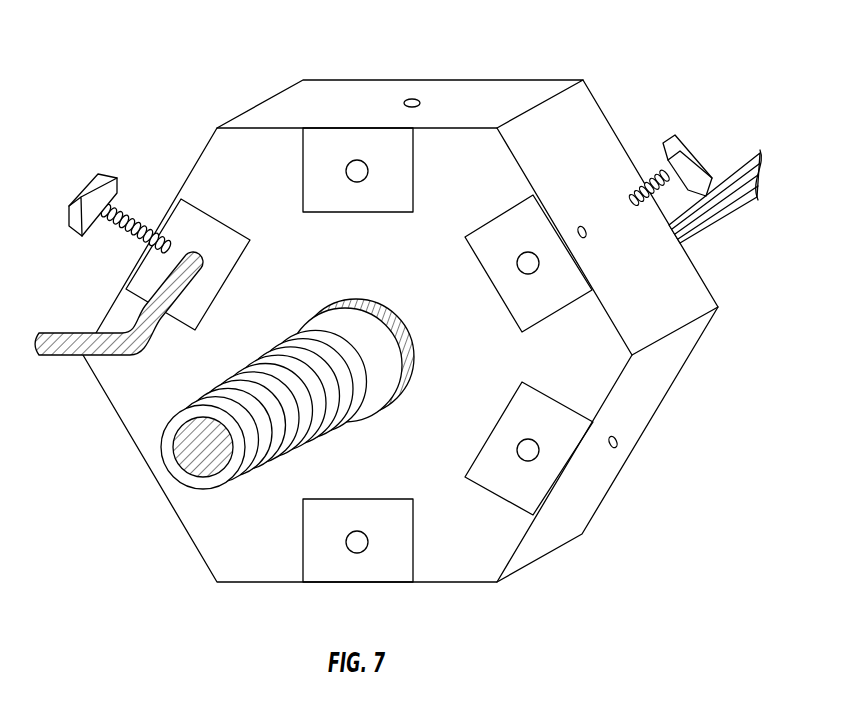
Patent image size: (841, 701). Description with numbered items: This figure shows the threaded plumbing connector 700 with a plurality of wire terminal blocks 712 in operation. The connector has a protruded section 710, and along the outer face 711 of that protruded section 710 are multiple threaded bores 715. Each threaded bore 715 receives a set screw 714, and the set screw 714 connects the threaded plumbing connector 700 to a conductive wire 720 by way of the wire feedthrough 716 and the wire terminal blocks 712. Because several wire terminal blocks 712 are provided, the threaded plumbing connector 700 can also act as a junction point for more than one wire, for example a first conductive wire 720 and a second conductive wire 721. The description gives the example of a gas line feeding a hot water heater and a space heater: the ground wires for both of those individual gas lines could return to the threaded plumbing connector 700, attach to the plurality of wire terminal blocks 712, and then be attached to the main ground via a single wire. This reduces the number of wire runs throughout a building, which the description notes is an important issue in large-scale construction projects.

The threaded plumbing connector 700 is at (398, 322).
The protruded section 710 is at (449, 584).
The outer face 711 is at (508, 96).
The wire terminal block 712 is at (357, 214).
The set screw 714 is at (109, 171).
The threaded bore 715 is at (413, 97).
The wire feedthrough 716 is at (368, 171).
The conductive wire 720 is at (67, 333).
The second conductive wire 721 is at (733, 177).